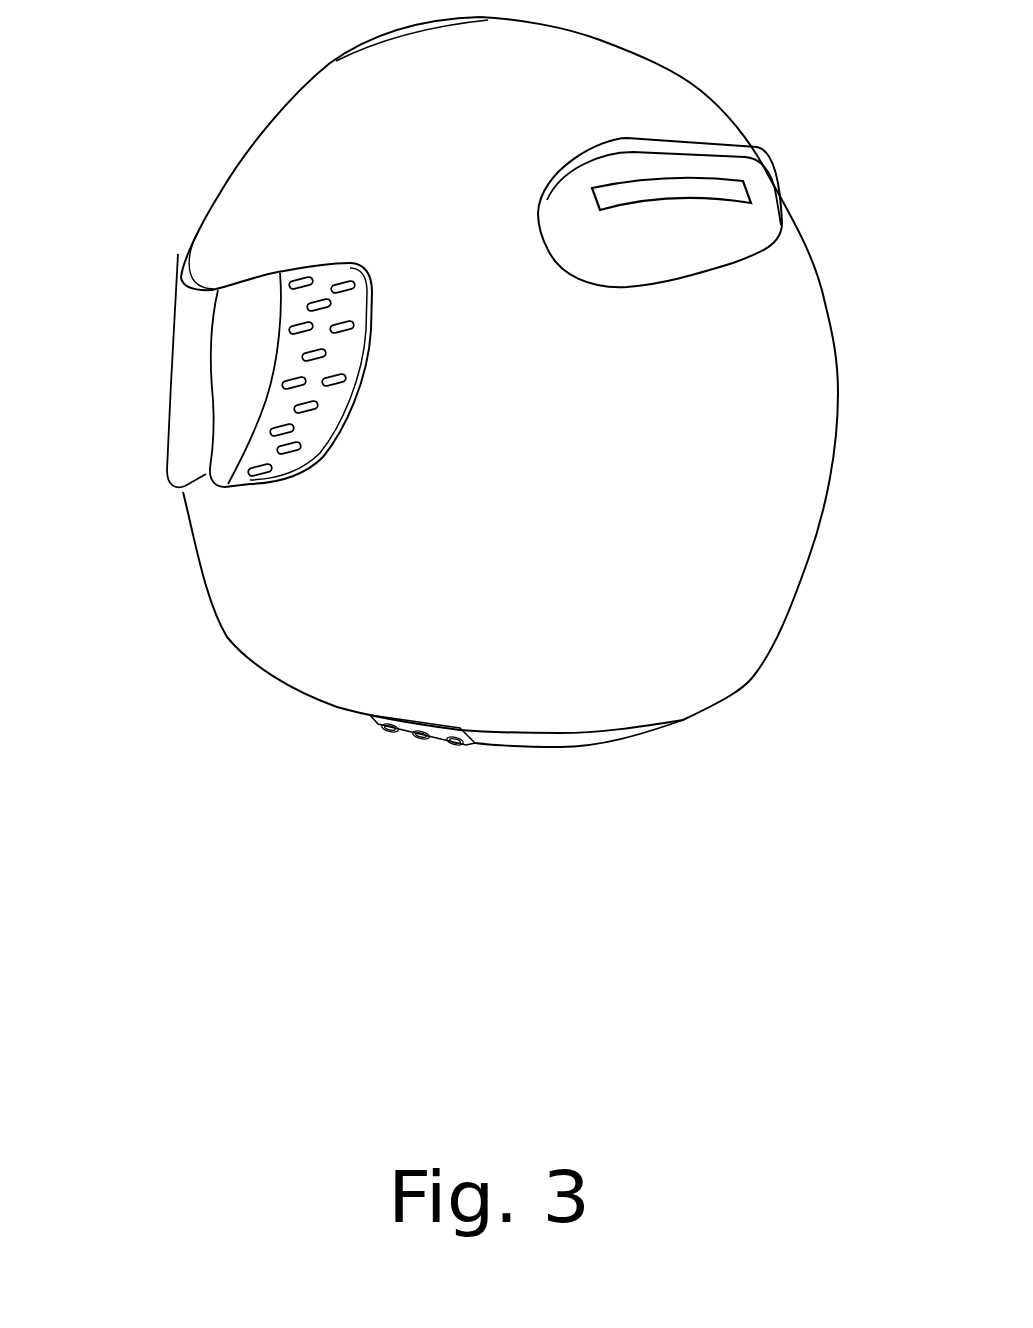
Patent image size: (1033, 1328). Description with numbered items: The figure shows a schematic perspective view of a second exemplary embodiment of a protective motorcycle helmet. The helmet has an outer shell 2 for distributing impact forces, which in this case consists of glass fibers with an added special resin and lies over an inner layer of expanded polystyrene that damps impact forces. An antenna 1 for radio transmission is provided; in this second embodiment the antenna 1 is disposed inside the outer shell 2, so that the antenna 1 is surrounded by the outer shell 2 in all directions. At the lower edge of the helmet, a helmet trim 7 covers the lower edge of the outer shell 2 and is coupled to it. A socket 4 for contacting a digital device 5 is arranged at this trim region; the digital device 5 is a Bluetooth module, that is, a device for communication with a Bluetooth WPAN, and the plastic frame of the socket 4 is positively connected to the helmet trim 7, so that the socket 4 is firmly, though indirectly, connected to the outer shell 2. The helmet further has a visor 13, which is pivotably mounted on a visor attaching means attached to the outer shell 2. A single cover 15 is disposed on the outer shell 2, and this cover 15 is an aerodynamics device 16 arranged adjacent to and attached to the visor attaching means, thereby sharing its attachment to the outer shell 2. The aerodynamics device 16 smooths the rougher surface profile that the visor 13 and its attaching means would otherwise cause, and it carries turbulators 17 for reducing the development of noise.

The antenna 1 is at (708, 187).
The outer shell 2 is at (795, 365).
The socket 4 is at (391, 794).
The digital device 5 is at (442, 740).
The helmet trim 7 is at (565, 745).
The visor 13 is at (193, 325).
The cover 15 is at (376, 327).
The aerodynamics device 16 is at (376, 382).
The turbulators 17 is at (331, 298).